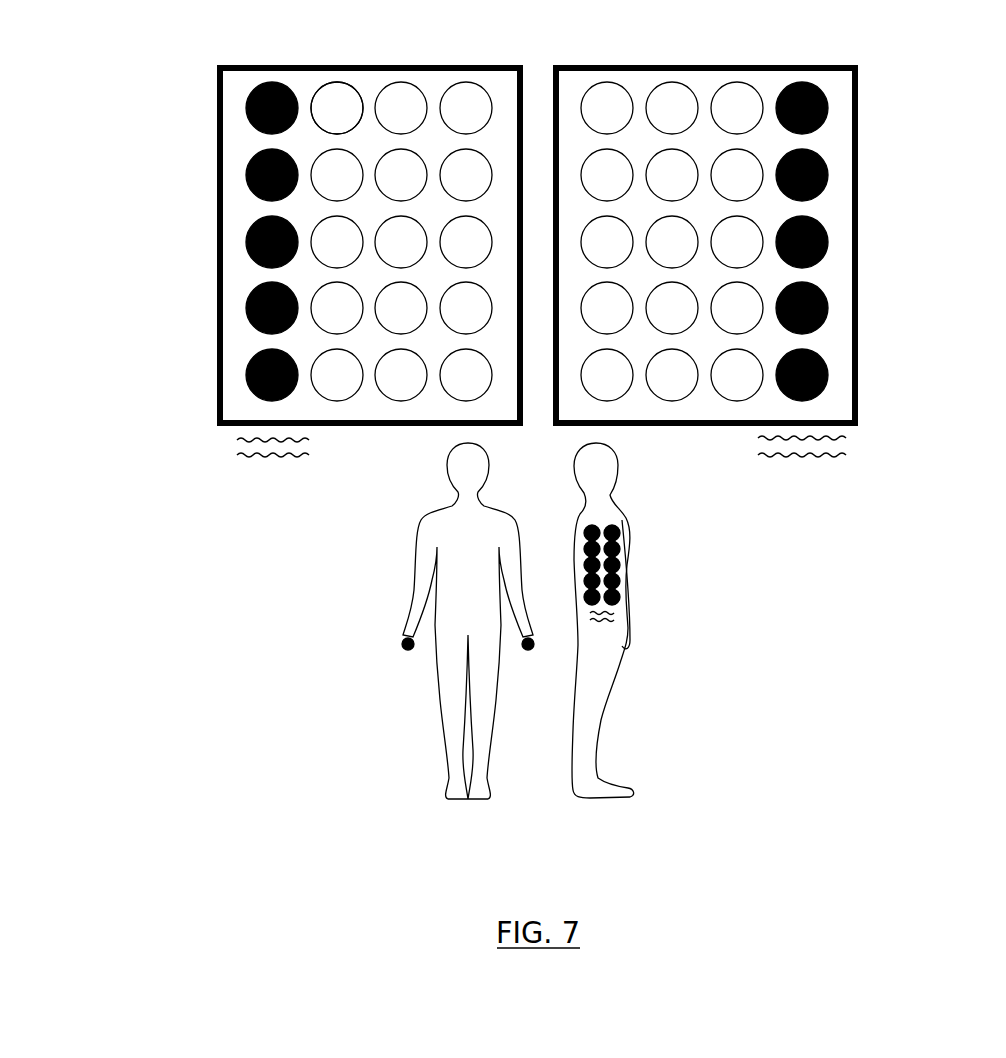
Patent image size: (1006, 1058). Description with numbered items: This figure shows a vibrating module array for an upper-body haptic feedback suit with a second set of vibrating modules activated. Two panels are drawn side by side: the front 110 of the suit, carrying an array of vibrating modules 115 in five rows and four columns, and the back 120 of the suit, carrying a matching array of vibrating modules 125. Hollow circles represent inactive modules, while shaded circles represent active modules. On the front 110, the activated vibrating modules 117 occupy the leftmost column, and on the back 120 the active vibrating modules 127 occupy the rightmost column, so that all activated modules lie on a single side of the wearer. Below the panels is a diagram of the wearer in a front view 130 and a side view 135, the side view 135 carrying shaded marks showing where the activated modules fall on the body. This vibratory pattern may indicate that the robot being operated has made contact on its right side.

The front 110 is at (215, 263).
The vibrating modules 115 is at (323, 88).
The activated vibrating modules 117 is at (252, 175).
The back 120 is at (860, 250).
The vibrating modules 125 is at (743, 88).
The active vibrating modules 127 is at (820, 157).
The front view 130 is at (432, 567).
The side view 135 is at (632, 513).